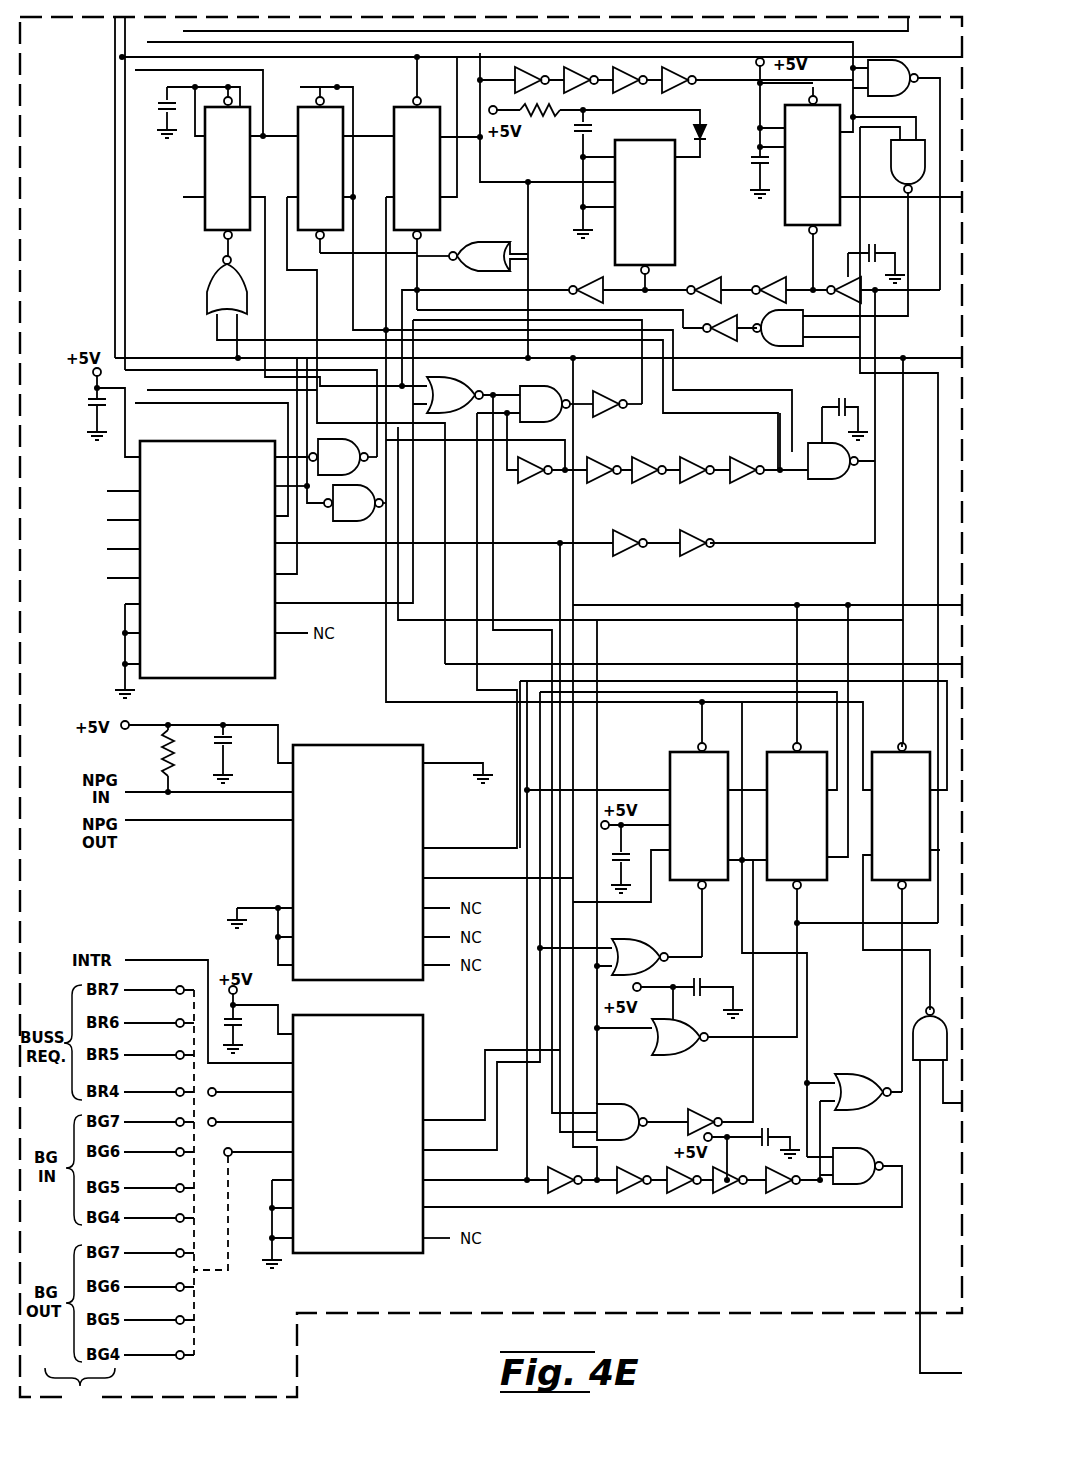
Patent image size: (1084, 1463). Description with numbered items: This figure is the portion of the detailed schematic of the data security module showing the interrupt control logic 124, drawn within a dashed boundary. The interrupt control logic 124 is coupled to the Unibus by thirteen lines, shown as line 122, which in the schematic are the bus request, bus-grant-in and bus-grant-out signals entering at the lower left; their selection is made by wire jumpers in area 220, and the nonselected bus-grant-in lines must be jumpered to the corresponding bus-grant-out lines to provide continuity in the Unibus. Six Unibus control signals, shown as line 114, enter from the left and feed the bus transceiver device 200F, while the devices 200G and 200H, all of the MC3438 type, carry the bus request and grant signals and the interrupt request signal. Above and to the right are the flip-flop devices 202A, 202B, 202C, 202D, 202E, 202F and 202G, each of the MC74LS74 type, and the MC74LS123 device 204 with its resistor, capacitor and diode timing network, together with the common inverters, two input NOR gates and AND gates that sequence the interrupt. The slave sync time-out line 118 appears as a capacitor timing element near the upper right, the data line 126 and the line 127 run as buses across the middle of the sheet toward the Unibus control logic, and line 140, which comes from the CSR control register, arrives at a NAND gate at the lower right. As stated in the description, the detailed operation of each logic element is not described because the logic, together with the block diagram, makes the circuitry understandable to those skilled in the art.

The interrupt control logic 124 is at (777, 1292).
The MC74LS74 device 202A is at (208, 226).
The MC74LS74 device 202B is at (303, 106).
The MC74LS74 device 202C is at (441, 210).
The MC74LS74 device 202D is at (672, 756).
The MC74LS74 device 202E is at (813, 882).
The MC74LS74 device 202F is at (918, 745).
The MC74LS74 device 202G is at (784, 218).
The MC74LS123 device 204 is at (676, 254).
The slave sync time-out line 118 is at (912, 240).
The Unibus control lines 114 is at (74, 588).
The data line 126 is at (428, 618).
The signal line 127 is at (386, 693).
The line 140 is at (914, 1138).
The jumper area 220 is at (206, 1286).
The Unibus interrupt lines 122 is at (80, 1387).
The MC3438 device 200F is at (230, 575).
The MC3438 device 200G is at (380, 872).
The MC3438 device 200H is at (380, 1142).